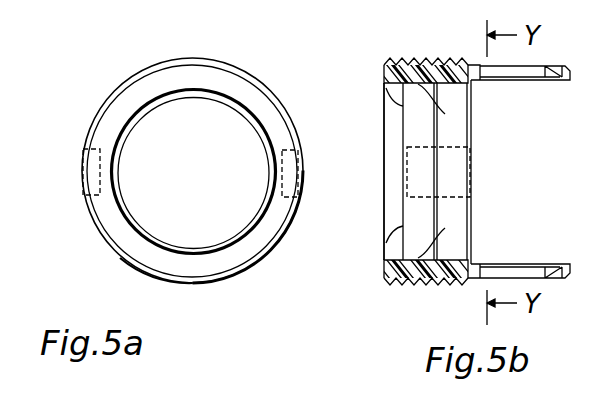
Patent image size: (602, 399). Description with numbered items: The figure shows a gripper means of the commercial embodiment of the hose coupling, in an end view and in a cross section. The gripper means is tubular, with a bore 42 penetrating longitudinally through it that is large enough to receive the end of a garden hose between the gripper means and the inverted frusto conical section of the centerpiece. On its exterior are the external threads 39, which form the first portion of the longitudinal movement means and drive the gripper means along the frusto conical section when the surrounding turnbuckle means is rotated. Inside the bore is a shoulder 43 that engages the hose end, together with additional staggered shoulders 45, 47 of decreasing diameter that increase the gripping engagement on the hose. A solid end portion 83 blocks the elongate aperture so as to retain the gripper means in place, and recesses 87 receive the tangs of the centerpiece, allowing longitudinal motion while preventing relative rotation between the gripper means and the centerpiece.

In FIG. 5a, the external threads 39 is at (272, 247).
In FIG. 5b, the external threads 39 is at (412, 284).
In FIG. 5a, the bore 42 is at (193, 153).
In FIG. 5b, the shoulder 43 is at (450, 87).
In FIG. 5b, the additional shoulder 45 is at (445, 114).
In FIG. 5a, the additional shoulder 47 is at (192, 90).
In FIG. 5b, the additional shoulder 47 is at (386, 90).
In FIG. 5b, the solid end portion 83 is at (550, 266).
In FIG. 5a, the recess 87 is at (90, 183).
In FIG. 5b, the recess 87 is at (447, 170).